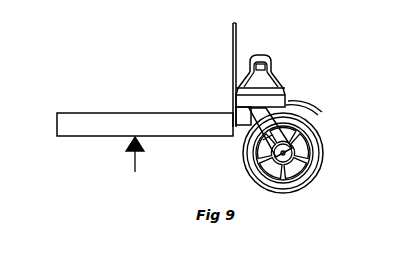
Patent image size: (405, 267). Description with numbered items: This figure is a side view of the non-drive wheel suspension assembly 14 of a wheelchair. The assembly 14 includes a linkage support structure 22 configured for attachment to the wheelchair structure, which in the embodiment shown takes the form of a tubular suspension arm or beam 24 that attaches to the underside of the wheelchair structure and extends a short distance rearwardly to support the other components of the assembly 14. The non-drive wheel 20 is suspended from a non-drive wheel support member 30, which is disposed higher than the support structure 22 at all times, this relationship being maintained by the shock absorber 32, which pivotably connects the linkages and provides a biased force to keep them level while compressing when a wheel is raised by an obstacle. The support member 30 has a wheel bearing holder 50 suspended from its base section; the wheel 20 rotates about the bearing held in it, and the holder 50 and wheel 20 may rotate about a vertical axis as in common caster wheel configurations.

The non-drive wheel suspension assembly 14 is at (315, 63).
The non-drive wheel 20 is at (322, 166).
The linkage support structure 22 is at (136, 166).
The tubular suspension arm 24 is at (209, 110).
The non-drive wheel support member 30 is at (291, 97).
The shock absorber 32 is at (266, 54).
The wheel bearing holder 50 is at (247, 167).